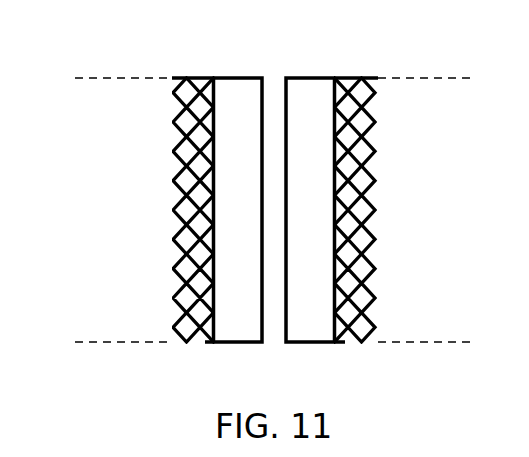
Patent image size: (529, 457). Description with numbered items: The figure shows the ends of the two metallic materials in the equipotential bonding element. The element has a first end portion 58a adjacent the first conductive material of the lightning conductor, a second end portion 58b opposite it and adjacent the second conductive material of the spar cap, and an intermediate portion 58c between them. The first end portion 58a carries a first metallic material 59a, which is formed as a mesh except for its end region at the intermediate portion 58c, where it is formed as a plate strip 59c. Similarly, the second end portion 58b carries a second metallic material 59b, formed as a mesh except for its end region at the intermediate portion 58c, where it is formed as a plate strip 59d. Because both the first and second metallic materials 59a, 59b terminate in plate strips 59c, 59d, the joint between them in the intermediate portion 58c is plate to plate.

The first end portion 58a is at (130, 53).
The second end portion 58b is at (500, 43).
The intermediate portion 58c is at (395, 53).
The first metallic material 59a is at (120, 330).
The second metallic material 59b is at (422, 318).
The plate strip 59c is at (240, 330).
The plate strip 59d is at (300, 330).